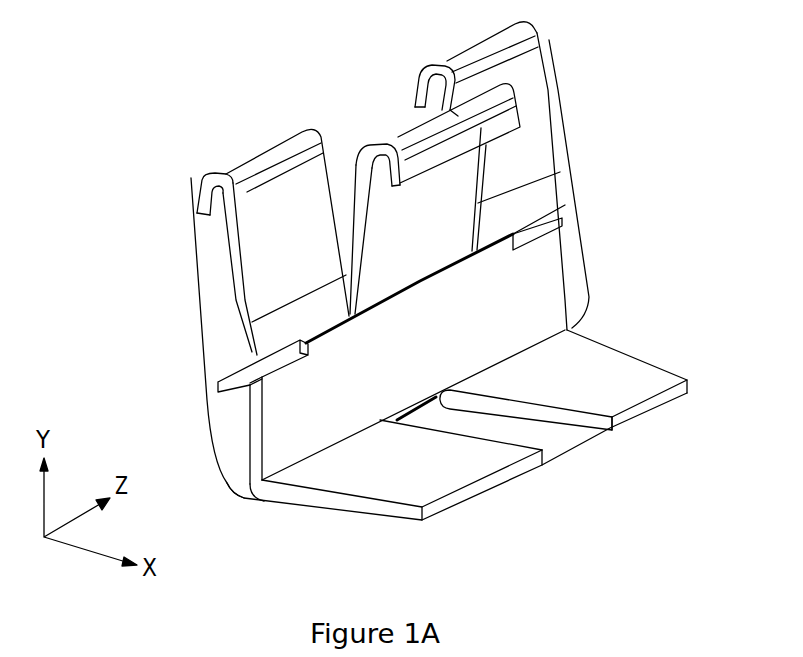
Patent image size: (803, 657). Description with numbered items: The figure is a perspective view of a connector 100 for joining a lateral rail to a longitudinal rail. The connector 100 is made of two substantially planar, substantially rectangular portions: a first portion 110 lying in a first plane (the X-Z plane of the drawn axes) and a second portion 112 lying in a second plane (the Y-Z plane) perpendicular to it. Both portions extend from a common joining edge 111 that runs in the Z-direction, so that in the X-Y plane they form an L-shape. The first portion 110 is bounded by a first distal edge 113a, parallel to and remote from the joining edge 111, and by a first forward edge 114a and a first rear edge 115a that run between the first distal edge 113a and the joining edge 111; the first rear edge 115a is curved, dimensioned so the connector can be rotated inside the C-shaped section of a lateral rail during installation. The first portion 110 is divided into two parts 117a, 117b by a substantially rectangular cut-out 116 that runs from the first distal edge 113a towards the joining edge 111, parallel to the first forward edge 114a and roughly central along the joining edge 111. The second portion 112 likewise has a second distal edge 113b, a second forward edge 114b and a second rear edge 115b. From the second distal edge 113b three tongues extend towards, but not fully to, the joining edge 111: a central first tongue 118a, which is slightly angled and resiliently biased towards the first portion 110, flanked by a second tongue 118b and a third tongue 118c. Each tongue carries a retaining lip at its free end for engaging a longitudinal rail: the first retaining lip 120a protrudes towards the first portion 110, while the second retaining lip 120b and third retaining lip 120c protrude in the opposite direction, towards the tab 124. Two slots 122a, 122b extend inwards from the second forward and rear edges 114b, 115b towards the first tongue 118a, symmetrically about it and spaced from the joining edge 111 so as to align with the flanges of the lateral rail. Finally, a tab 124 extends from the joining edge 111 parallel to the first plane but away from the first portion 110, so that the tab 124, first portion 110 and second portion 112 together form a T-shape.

The connector 100 is at (201, 88).
The first portion 110 is at (543, 452).
The joining edge 111 is at (302, 465).
The second portion 112 is at (335, 343).
The first distal edge 113a is at (619, 445).
The second distal edge 113b is at (525, 14).
The first forward edge 114a is at (418, 530).
The second forward edge 114b is at (186, 176).
The first rear edge 115a is at (698, 386).
The second rear edge 115b is at (545, 28).
The cut-out 116 is at (548, 433).
The first part of first portion 117a is at (429, 477).
The second part of first portion 117b is at (595, 380).
The first tongue 118a is at (444, 229).
The second tongue 118b is at (543, 171).
The third tongue 118c is at (312, 250).
The first retaining lip 120a is at (397, 162).
The second retaining lip 120b is at (424, 100).
The third retaining lip 120c is at (209, 183).
The slot 122a is at (252, 334).
The slot 122b is at (556, 225).
The tab 124 is at (228, 393).